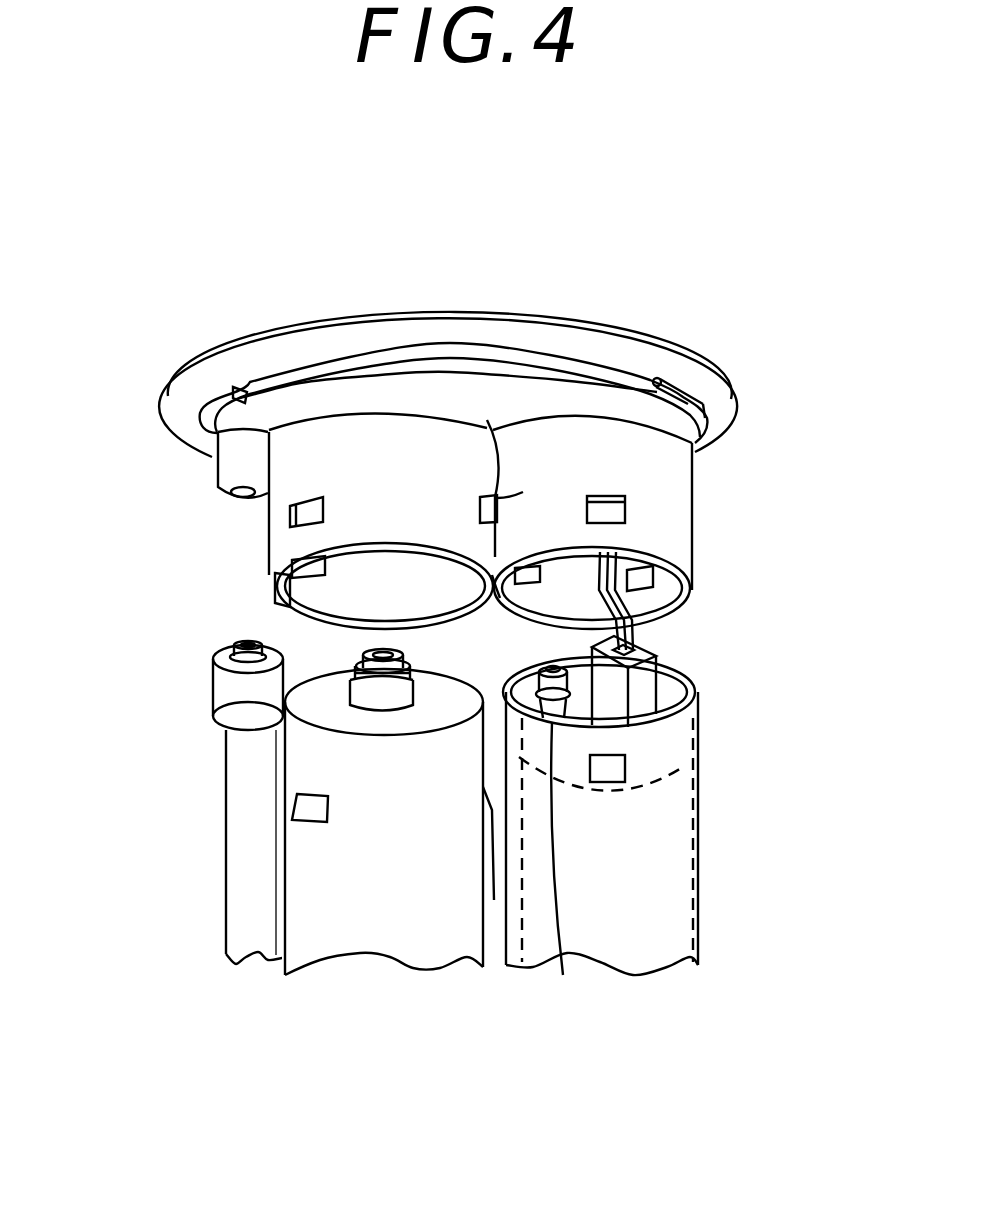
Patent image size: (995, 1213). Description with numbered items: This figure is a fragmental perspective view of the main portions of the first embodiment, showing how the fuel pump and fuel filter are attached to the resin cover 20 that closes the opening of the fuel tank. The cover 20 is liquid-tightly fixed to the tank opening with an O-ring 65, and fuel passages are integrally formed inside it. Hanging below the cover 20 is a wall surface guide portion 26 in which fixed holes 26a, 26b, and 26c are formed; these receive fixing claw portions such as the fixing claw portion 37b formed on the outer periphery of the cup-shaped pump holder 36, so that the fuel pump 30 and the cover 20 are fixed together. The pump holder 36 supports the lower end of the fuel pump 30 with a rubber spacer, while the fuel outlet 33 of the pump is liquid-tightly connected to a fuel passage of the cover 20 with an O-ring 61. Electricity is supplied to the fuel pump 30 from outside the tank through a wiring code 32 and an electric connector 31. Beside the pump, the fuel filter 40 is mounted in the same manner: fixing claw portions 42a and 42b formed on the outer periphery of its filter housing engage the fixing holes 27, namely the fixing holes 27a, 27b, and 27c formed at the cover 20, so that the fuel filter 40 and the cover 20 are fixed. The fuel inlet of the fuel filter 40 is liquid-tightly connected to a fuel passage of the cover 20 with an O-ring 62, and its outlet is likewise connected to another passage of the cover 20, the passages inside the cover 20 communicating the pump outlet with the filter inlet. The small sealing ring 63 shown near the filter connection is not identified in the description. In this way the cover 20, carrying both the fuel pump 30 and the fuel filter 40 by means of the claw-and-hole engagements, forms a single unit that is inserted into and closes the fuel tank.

The cover 20 is at (537, 321).
The O-ring 65 is at (707, 410).
The wall surface guide portion 26 is at (686, 552).
The fixed hole 26a is at (663, 582).
The fixed hole 26b is at (625, 512).
The fixed hole 26c is at (525, 598).
The fixing holes 27 is at (275, 560).
The fixing hole 27a is at (487, 420).
The fixing hole 27b is at (287, 515).
The fixing hole 27c is at (278, 590).
The fuel pump 30 is at (660, 700).
The electric connector 31 is at (640, 674).
The wiring code 32 is at (690, 595).
The fuel outlet 33 is at (570, 716).
The pump holder 36 is at (700, 920).
The fixing claw portion 37b is at (625, 770).
The fuel filter 40 is at (228, 914).
The fixing claw portion 42a is at (494, 900).
The fixing claw portion 42b is at (292, 815).
The O-ring 61 is at (563, 975).
The O-ring 62 is at (214, 716).
The nipple of cylinder 62 63 is at (213, 654).